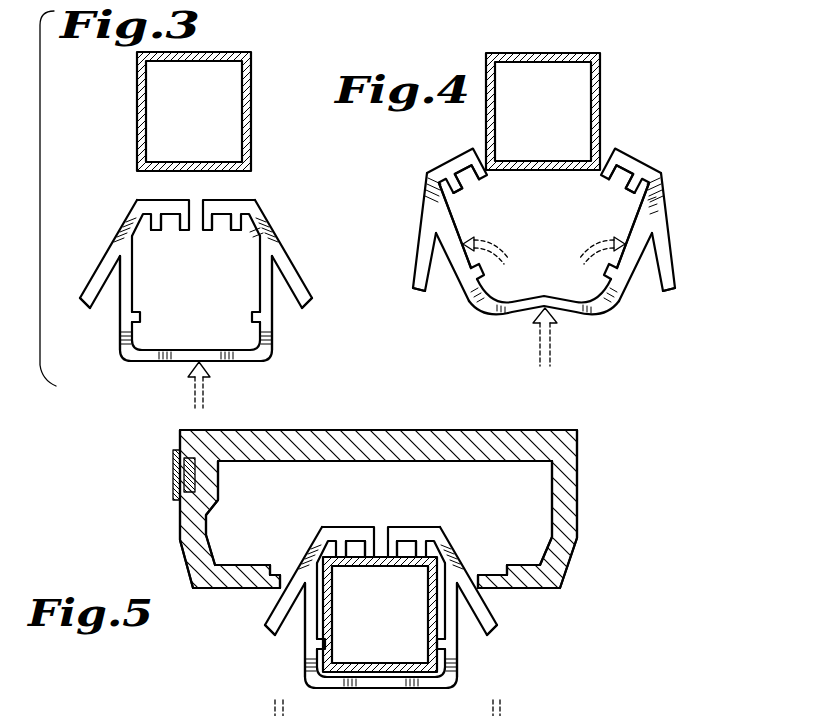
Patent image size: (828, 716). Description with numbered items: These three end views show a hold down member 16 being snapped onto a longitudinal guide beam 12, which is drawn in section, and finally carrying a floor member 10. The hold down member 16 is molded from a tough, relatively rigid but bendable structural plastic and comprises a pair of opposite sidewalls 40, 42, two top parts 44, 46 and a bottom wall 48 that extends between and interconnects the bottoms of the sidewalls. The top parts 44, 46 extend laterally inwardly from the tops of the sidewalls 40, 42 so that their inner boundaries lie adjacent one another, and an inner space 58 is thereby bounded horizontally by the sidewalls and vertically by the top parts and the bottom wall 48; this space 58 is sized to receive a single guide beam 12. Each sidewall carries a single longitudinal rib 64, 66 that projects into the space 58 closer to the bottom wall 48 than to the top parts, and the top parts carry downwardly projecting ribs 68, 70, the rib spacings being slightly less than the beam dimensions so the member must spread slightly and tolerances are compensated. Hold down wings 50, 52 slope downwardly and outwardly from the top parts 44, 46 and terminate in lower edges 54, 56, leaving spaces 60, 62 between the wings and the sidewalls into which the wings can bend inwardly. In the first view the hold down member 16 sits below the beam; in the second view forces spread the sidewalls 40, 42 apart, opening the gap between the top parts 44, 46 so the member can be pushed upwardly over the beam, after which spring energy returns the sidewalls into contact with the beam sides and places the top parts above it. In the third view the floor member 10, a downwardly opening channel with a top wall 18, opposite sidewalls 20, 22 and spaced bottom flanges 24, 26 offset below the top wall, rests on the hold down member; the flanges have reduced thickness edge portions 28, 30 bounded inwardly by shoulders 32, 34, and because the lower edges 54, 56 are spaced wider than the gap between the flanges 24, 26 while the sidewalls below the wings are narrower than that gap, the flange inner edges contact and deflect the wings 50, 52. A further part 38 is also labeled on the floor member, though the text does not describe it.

In FIG. 5, the floor member 10 is at (370, 533).
In FIG. 3, the guide beam 12 is at (253, 83).
In FIG. 4, the guide beam 12 is at (600, 96).
In FIG. 5, the guide beam 12 is at (413, 657).
In FIG. 3, the hold down member 16 is at (192, 300).
In FIG. 4, the hold down member 16 is at (541, 255).
In FIG. 5, the hold down member 16 is at (401, 593).
In FIG. 5, the top wall 18 is at (441, 440).
In FIG. 5, the sidewall 20 is at (180, 510).
In FIG. 5, the sidewall 22 is at (572, 500).
In FIG. 5, the bottom flange 24 is at (217, 582).
In FIG. 5, the bottom flange 26 is at (537, 588).
In FIG. 5, the reduced thickness portion 28 is at (268, 573).
In FIG. 5, the reduced thickness portion 30 is at (487, 575).
In FIG. 5, the shoulder 32 is at (254, 566).
In FIG. 5, the shoulder 34 is at (507, 565).
In FIG. 5, the fastener 38 is at (173, 467).
In FIG. 3, the sidewall 40 is at (122, 300).
In FIG. 4, the sidewall 40 is at (464, 270).
In FIG. 5, the sidewall 40 is at (305, 640).
In FIG. 3, the sidewall 42 is at (272, 343).
In FIG. 4, the sidewall 42 is at (641, 266).
In FIG. 5, the sidewall 42 is at (452, 643).
In FIG. 3, the top part 44 is at (153, 199).
In FIG. 4, the top part 44 is at (438, 170).
In FIG. 5, the top part 44 is at (338, 533).
In FIG. 3, the top part 46 is at (240, 199).
In FIG. 4, the top part 46 is at (637, 165).
In FIG. 5, the top part 46 is at (413, 530).
In FIG. 3, the bottom wall 48 is at (220, 360).
In FIG. 4, the bottom wall 48 is at (517, 311).
In FIG. 5, the bottom wall 48 is at (368, 690).
In FIG. 3, the hold down wing 50 is at (86, 280).
In FIG. 4, the hold down wing 50 is at (413, 240).
In FIG. 5, the hold down wing 50 is at (293, 557).
In FIG. 3, the hold down wing 52 is at (307, 280).
In FIG. 4, the hold down wing 52 is at (668, 237).
In FIG. 5, the hold down wing 52 is at (483, 570).
In FIG. 3, the lower edge 54 is at (88, 303).
In FIG. 4, the lower edge 54 is at (422, 296).
In FIG. 5, the lower edge 54 is at (266, 626).
In FIG. 3, the lower edge 56 is at (298, 308).
In FIG. 4, the lower edge 56 is at (672, 297).
In FIG. 5, the lower edge 56 is at (503, 630).
In FIG. 3, the inner space 58 is at (240, 252).
In FIG. 4, the inner space 58 is at (594, 222).
In FIG. 3, the space 60 is at (100, 290).
In FIG. 4, the space 60 is at (442, 253).
In FIG. 5, the space 60 is at (300, 598).
In FIG. 3, the space 62 is at (275, 292).
In FIG. 4, the space 62 is at (622, 290).
In FIG. 5, the space 62 is at (468, 618).
In FIG. 3, the rib 64 is at (140, 317).
In FIG. 4, the rib 64 is at (480, 277).
In FIG. 5, the rib 64 is at (335, 642).
In FIG. 3, the rib 66 is at (253, 317).
In FIG. 4, the rib 66 is at (612, 278).
In FIG. 5, the rib 66 is at (437, 637).
In FIG. 3, the rib 68 is at (163, 233).
In FIG. 4, the rib 68 is at (465, 188).
In FIG. 5, the rib 68 is at (340, 560).
In FIG. 3, the rib 70 is at (222, 233).
In FIG. 4, the rib 70 is at (620, 188).
In FIG. 5, the rib 70 is at (417, 566).